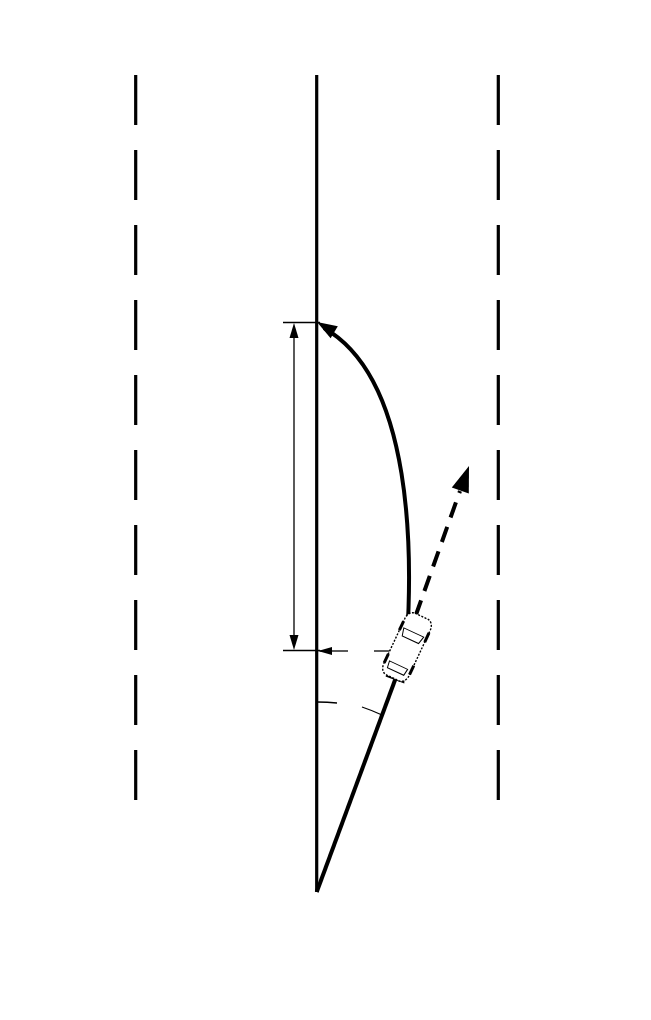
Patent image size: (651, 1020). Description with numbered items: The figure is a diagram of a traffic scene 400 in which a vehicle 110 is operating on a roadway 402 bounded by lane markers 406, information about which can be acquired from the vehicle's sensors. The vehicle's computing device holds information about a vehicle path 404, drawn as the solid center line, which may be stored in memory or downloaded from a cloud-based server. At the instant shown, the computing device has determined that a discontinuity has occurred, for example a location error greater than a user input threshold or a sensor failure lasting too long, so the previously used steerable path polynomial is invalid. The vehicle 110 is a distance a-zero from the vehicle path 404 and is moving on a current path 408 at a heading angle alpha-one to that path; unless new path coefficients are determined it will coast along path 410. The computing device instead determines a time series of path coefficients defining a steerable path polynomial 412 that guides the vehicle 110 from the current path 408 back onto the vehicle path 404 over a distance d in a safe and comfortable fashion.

The traffic scene 400 is at (341, 32).
The roadway 402 is at (228, 755).
The vehicle path 404 is at (316, 792).
The lane markers 406 is at (80, 608).
The path 408 is at (377, 737).
The path 410 is at (442, 550).
The steerable path polynomial 412 is at (387, 423).
The vehicle 110 is at (420, 660).